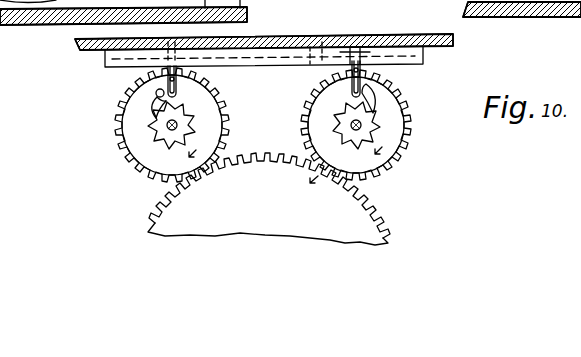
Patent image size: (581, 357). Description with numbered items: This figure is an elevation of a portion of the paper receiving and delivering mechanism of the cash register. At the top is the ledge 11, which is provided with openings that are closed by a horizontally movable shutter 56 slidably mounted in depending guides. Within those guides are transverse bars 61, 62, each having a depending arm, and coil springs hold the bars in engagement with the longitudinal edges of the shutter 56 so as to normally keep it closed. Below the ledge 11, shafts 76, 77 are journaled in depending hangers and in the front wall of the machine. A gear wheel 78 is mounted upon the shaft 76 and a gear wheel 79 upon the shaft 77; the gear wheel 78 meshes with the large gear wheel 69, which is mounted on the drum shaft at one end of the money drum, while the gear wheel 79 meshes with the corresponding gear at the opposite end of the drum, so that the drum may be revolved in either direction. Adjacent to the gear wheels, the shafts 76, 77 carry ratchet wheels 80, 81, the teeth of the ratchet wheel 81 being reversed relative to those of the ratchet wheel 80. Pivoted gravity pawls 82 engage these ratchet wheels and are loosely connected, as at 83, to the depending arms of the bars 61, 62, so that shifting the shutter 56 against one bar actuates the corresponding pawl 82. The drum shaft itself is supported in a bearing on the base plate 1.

The base plate 1 is at (22, 19).
The ledge 11 is at (390, 38).
The shutter 56 is at (310, 33).
The transverse bar 61 is at (355, 36).
The transverse bar 62 is at (181, 33).
The gear wheel 69 is at (275, 215).
The shaft 76 is at (168, 130).
The shaft 77 is at (362, 127).
The gear wheel 78 is at (136, 168).
The gear wheel 79 is at (398, 160).
The ratchet wheel 80 is at (152, 128).
The ratchet wheel 81 is at (380, 115).
The gravity pawl 82 is at (156, 94).
The loose connection 83 is at (177, 73).